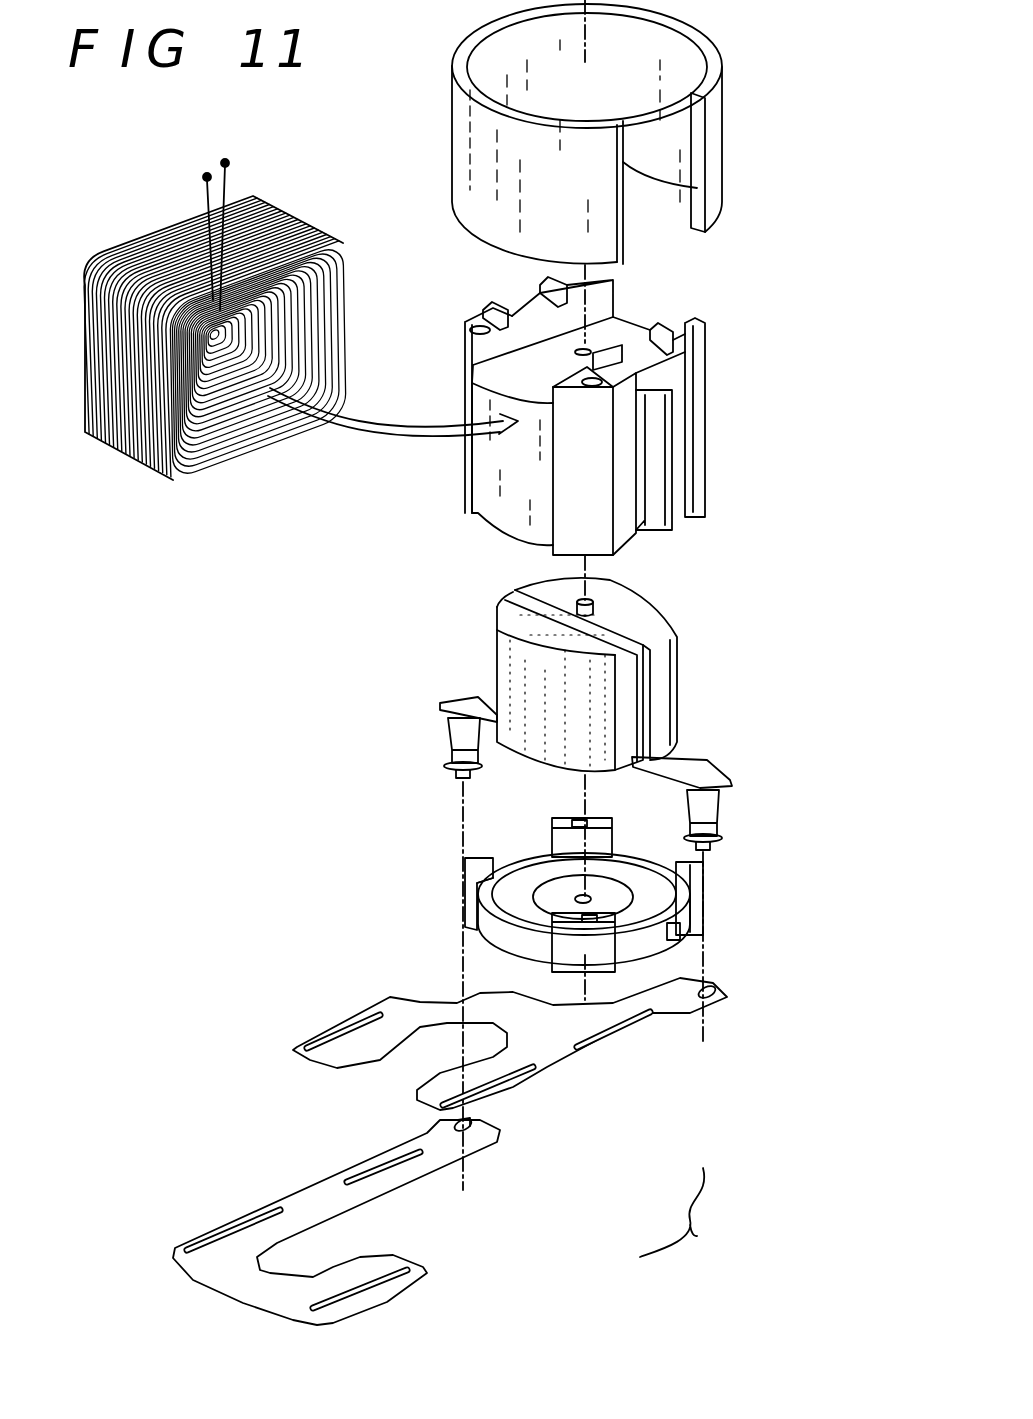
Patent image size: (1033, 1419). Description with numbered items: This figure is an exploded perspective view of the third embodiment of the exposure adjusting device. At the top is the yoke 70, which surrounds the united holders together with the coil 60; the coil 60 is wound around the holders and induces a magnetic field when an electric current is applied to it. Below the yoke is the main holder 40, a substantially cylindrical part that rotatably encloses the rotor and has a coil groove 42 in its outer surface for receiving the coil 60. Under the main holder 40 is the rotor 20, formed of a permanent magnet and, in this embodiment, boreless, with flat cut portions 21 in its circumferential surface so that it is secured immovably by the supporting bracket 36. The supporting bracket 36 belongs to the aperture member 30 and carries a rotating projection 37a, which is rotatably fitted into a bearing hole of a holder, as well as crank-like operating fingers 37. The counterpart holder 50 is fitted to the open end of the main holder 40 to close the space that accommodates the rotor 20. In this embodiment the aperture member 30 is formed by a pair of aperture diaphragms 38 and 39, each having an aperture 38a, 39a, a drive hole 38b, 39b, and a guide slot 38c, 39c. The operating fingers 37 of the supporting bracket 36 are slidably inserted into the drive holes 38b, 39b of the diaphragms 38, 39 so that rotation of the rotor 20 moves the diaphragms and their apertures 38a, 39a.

The yoke 70 is at (732, 123).
The coil 60 is at (137, 450).
The main holder 40 is at (622, 420).
The coil groove 42 is at (505, 517).
The rotor 20 is at (579, 714).
The flat cut portions 21 is at (633, 705).
The supporting bracket 36 is at (673, 612).
The crank-like operating fingers 37 is at (445, 750).
The rotating projection 37a is at (605, 588).
The counterpart holder 50 is at (712, 905).
The aperture member 30 is at (688, 1216).
The aperture diaphragm 38 is at (551, 1088).
The aperture 38a is at (403, 1047).
The drive hole 38b is at (727, 985).
The guide slot 38c is at (630, 1040).
The aperture diaphragm 39 is at (368, 1221).
The aperture 39a is at (310, 1253).
The drive hole 39b is at (527, 1151).
The guide slot 39c is at (233, 1223).